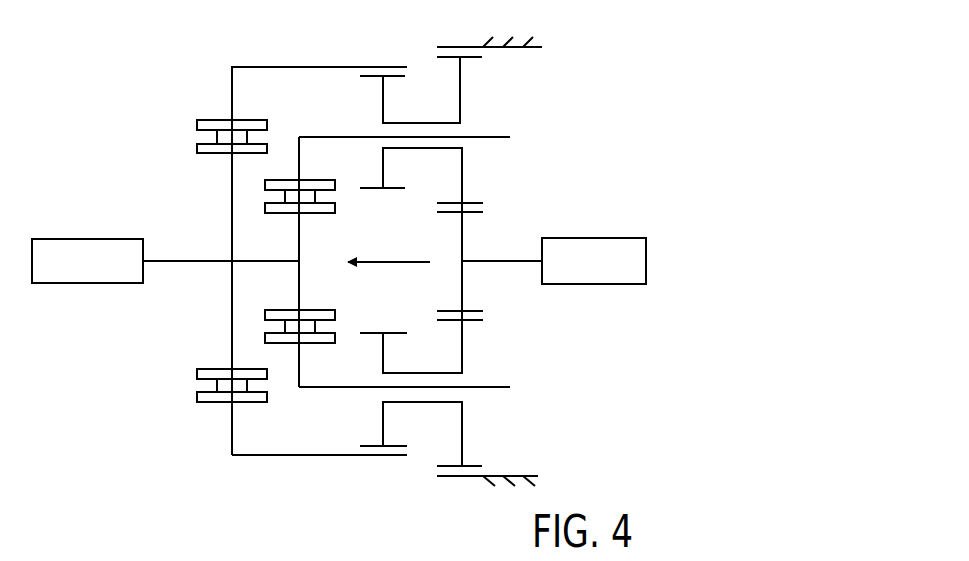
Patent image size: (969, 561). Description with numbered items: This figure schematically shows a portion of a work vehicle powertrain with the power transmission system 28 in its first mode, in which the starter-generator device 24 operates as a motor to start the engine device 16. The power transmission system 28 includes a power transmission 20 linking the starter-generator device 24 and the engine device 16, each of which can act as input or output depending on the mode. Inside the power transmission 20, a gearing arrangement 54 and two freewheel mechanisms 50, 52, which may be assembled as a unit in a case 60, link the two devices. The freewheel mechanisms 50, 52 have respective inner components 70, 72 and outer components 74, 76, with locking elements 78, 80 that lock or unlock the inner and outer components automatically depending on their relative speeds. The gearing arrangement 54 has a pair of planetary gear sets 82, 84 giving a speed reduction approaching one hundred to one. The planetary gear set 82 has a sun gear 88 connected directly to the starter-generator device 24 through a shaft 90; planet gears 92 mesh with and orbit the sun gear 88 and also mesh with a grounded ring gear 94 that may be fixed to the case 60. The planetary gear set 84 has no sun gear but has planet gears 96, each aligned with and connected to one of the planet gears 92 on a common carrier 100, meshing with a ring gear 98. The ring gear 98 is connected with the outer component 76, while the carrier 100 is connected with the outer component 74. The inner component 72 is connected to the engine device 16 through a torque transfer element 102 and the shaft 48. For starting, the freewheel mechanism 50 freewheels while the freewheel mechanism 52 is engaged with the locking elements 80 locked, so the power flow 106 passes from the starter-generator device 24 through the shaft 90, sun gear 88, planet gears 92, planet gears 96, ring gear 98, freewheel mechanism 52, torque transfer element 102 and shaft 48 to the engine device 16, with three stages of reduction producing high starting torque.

The engine device 16 is at (87, 283).
The power transmission 20 is at (222, 473).
The starter-generator device 24 is at (593, 238).
The power transmission system 28 is at (450, 68).
The shaft 48 is at (205, 263).
The freewheel mechanism 50 is at (343, 262).
The freewheel mechanism 52 is at (208, 149).
The gearing arrangement 54 is at (277, 46).
The case 60 is at (513, 50).
The inner component 70 is at (313, 213).
The inner component 72 is at (248, 157).
The outer component 74 is at (313, 180).
The outer component 76 is at (247, 120).
The locking elements 78 is at (268, 197).
The locking elements 80 is at (217, 137).
The planetary gear set 82 is at (458, 487).
The planetary gear set 84 is at (383, 468).
The sun gear 88 is at (463, 248).
The shaft 90 is at (500, 262).
The planet gears 92 is at (461, 104).
The ring gear 94 is at (458, 47).
The planet gears 96 is at (390, 78).
The ring gear 98 is at (383, 66).
The carrier 100 is at (352, 388).
The torque transfer element 102 is at (232, 246).
The power flow 106 is at (390, 263).